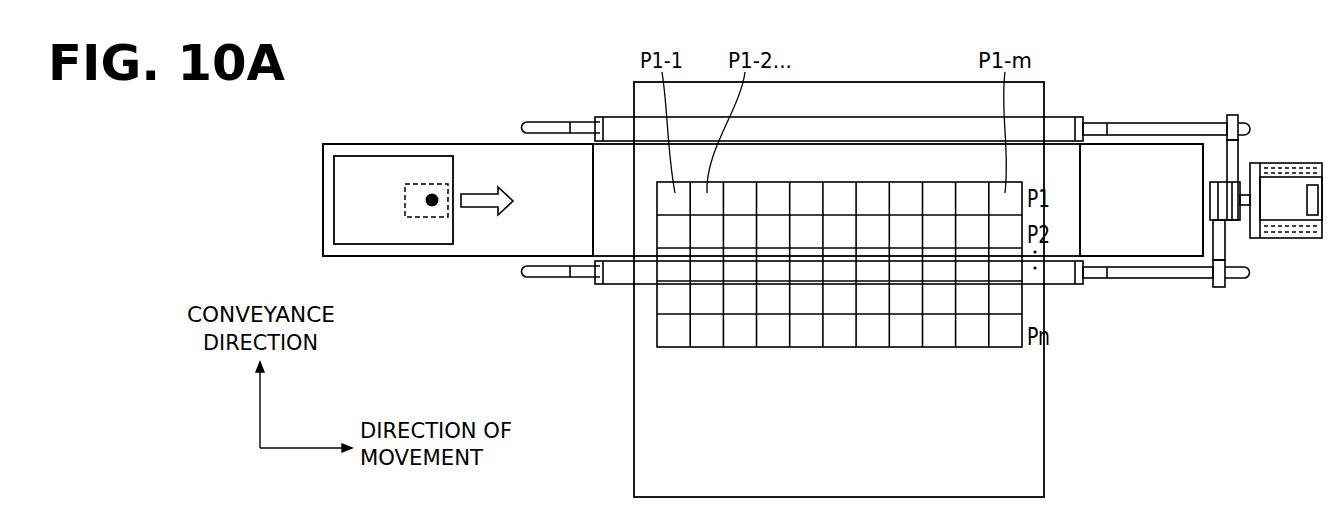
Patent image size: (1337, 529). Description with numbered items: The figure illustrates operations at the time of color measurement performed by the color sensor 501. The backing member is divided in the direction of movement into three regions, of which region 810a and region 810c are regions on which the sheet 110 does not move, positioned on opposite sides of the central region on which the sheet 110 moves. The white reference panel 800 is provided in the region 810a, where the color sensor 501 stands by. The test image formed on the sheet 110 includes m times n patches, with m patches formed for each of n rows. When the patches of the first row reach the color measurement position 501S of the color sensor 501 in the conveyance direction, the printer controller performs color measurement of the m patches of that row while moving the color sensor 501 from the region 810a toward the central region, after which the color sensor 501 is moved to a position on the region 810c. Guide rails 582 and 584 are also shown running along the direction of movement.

The sheet 110 is at (1023, 463).
The color sensor 501 is at (358, 215).
The color measurement position 501S is at (432, 207).
The white reference panel 800 is at (415, 187).
The region 810a is at (488, 243).
The region 810c is at (1148, 238).
The guide rail 582 is at (1058, 281).
The guide rail 584 is at (617, 125).